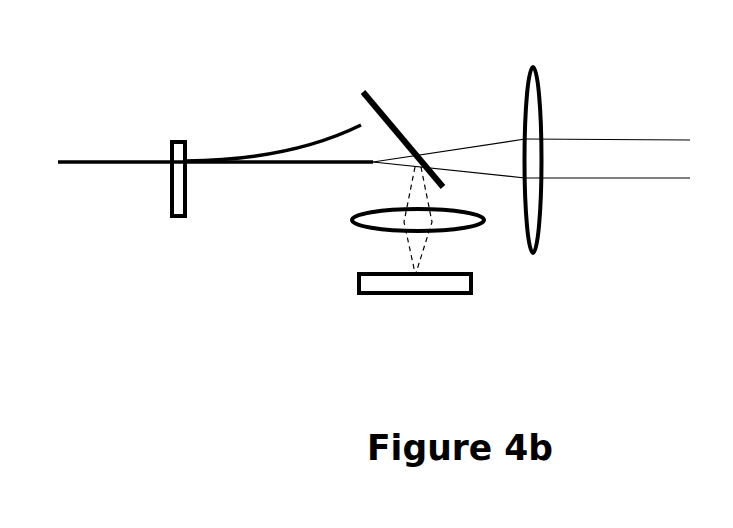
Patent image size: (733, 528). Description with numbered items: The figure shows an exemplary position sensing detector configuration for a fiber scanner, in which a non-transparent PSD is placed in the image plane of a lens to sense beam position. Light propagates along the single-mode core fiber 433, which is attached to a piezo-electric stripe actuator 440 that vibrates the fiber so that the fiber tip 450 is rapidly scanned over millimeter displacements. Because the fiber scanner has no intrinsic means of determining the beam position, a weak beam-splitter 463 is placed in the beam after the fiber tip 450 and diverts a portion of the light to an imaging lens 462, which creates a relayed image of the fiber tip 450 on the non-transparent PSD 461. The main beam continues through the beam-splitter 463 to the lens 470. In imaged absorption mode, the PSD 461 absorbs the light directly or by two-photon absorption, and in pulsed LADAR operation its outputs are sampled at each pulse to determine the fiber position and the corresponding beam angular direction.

The single-mode core fiber 433 is at (215, 143).
The piezo-electric stripe actuator 440 is at (179, 141).
The fiber tip 450 is at (516, 157).
The non-transparent PSD 461 is at (358, 282).
The imaging lens 462 is at (353, 221).
The beam-splitter 463 is at (408, 145).
The lens 470 is at (541, 90).